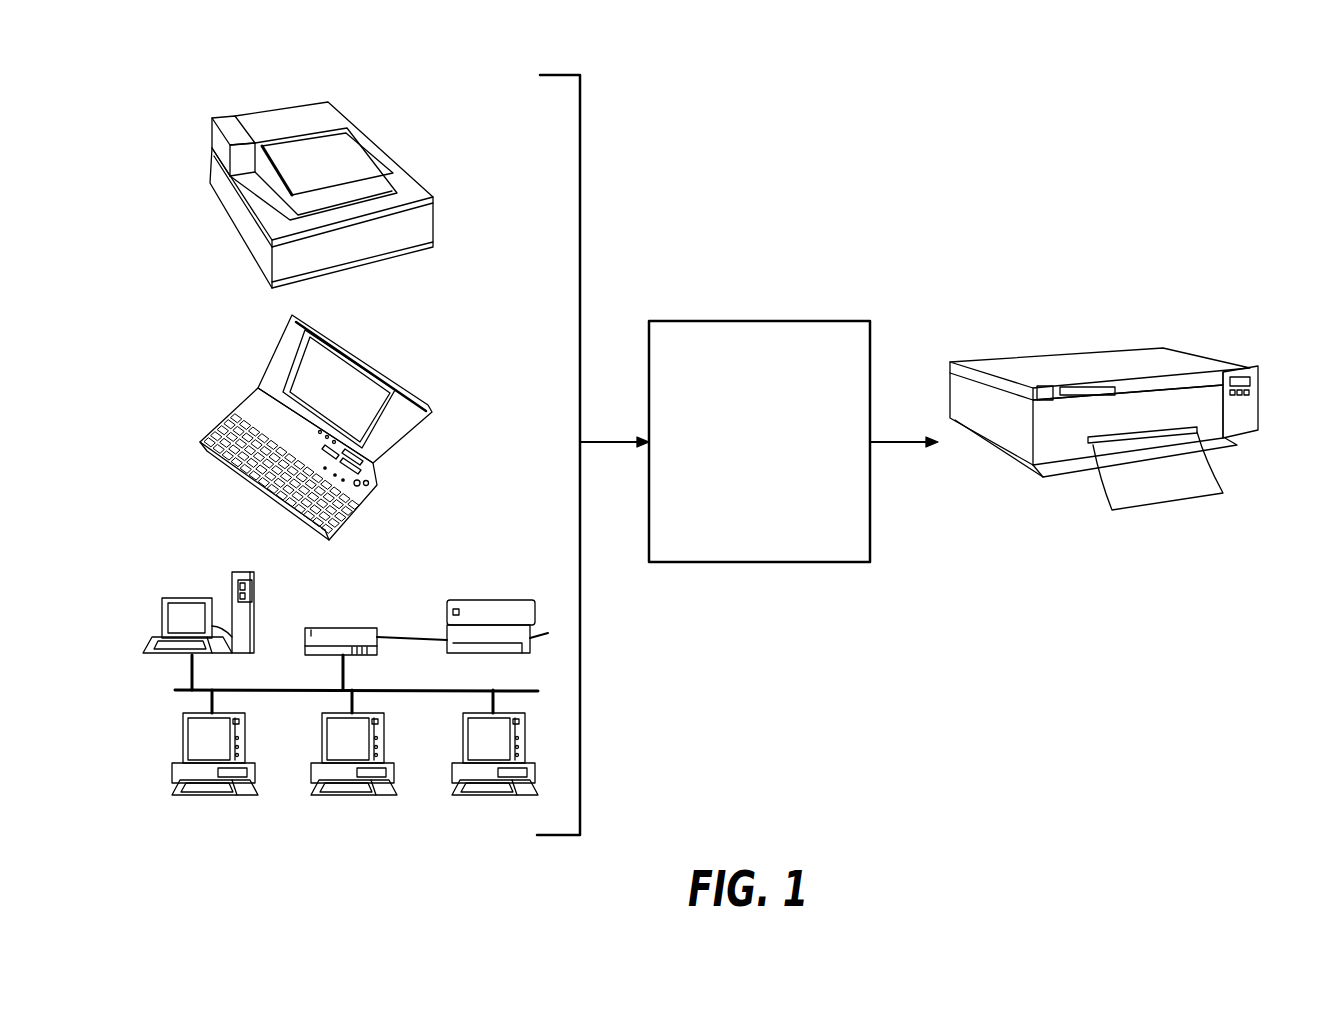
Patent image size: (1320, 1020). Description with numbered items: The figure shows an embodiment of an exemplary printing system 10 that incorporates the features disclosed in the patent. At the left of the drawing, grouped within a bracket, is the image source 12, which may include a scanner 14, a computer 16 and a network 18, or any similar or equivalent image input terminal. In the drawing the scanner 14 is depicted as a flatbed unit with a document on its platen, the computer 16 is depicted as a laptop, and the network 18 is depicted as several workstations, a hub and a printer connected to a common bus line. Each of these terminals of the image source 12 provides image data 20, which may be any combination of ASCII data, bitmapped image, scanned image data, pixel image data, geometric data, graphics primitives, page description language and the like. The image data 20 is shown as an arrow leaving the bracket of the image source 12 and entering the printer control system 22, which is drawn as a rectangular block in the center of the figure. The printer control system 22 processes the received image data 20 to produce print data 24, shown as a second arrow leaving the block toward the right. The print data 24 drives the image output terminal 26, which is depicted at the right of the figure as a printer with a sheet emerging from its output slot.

The printing system 10 is at (822, 155).
The image source 12 is at (421, 444).
The scanner 14 is at (438, 281).
The computer 16 is at (392, 368).
The network 18 is at (261, 842).
The image data 20 is at (604, 440).
The printer control system 22 is at (750, 563).
The print data 24 is at (903, 440).
The image output terminal (IOT) 26 is at (1068, 474).